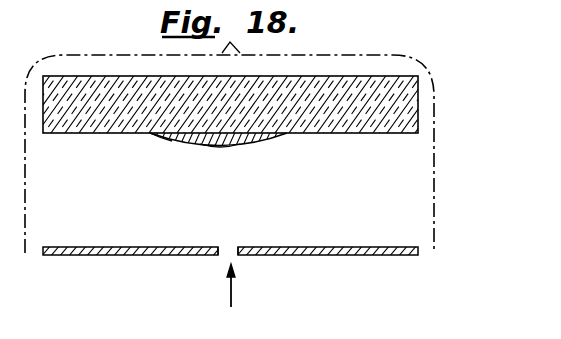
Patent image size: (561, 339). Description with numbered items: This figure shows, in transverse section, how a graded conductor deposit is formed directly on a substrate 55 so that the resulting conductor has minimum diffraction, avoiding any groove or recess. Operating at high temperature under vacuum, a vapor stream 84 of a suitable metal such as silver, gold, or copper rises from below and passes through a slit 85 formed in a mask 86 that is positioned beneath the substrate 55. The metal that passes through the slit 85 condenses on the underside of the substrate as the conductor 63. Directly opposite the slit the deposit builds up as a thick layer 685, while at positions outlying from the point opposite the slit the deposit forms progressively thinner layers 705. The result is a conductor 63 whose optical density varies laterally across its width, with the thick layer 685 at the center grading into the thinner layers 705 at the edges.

The body block 55 is at (397, 118).
The conductor 63 is at (230, 134).
The progressively thinner layers 705 is at (172, 140).
The thick layer 685 is at (222, 145).
The slit 85 is at (231, 245).
The mask 86 is at (331, 233).
The vapor stream 84 is at (231, 290).